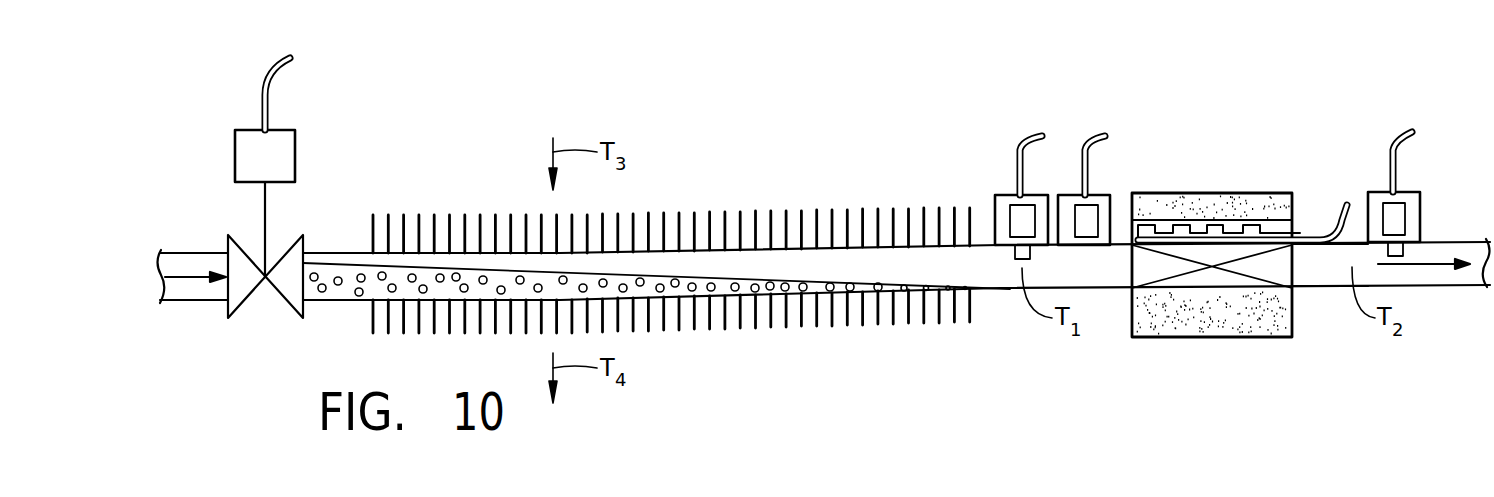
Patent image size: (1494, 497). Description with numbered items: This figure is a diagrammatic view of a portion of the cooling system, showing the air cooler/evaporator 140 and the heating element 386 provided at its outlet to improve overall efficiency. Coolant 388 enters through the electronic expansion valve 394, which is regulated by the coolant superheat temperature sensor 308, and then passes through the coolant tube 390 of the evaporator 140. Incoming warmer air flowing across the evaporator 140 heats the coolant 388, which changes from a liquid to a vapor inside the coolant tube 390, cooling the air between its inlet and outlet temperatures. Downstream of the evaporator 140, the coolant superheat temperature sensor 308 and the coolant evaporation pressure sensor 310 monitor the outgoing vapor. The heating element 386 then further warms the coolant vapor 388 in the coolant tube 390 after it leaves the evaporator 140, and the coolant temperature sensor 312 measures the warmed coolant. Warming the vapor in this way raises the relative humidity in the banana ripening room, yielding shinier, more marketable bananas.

The coolant 388 is at (172, 277).
The electronic expansion valve 394 is at (236, 318).
The air cooler/evaporator 140 is at (950, 192).
The coolant superheat temperature sensor 308 is at (1013, 195).
The coolant evaporation pressure sensor 310 is at (1093, 195).
The heating element 386 is at (1263, 190).
The coolant temperature sensor 312 is at (1412, 218).
The coolant tube 390 is at (1318, 290).